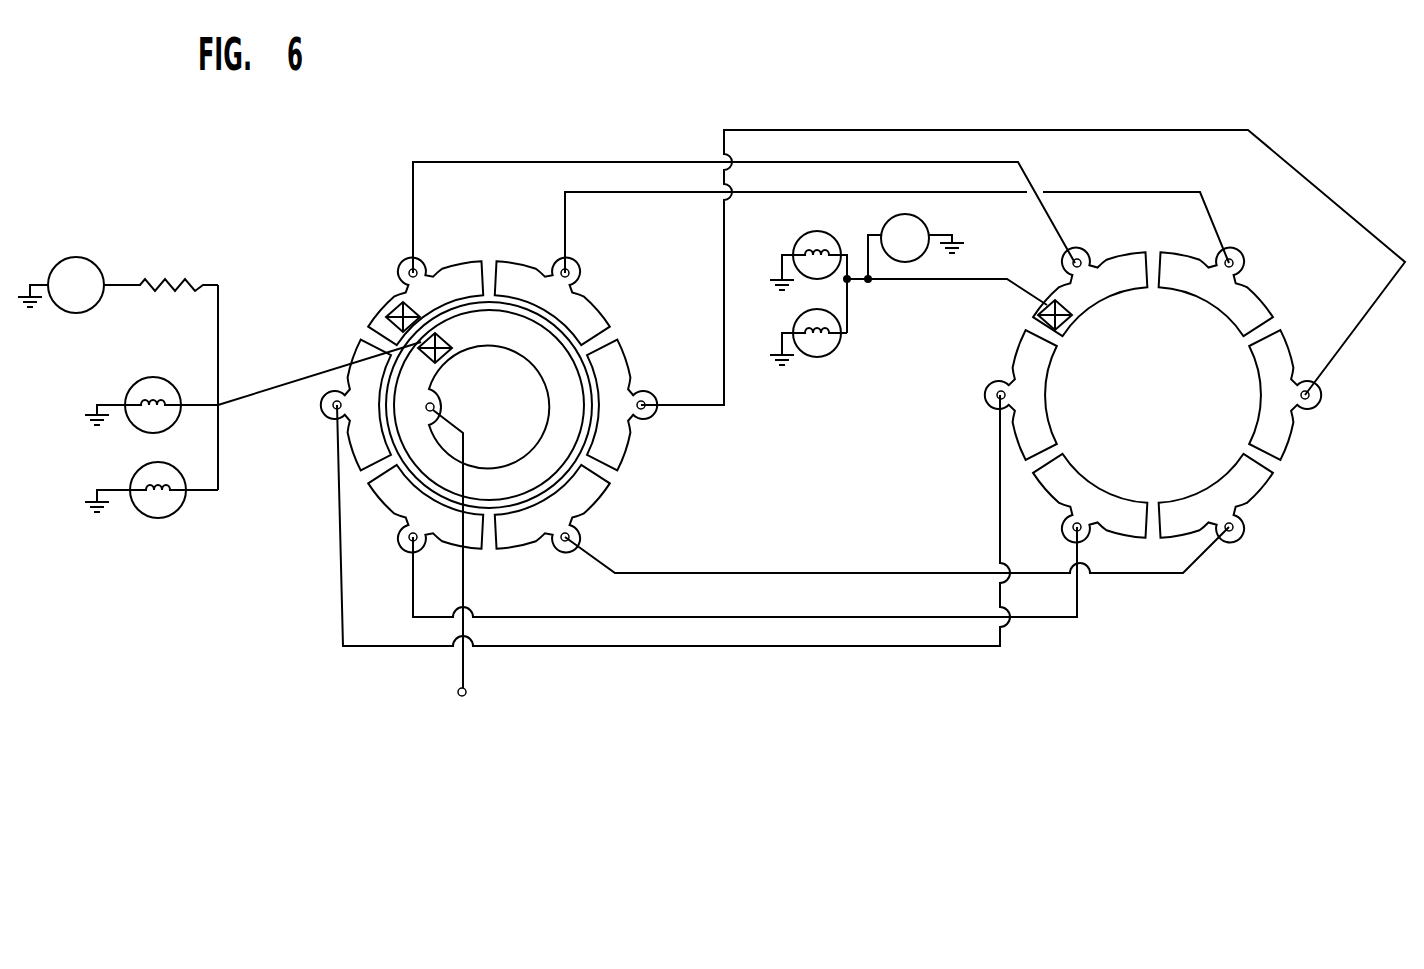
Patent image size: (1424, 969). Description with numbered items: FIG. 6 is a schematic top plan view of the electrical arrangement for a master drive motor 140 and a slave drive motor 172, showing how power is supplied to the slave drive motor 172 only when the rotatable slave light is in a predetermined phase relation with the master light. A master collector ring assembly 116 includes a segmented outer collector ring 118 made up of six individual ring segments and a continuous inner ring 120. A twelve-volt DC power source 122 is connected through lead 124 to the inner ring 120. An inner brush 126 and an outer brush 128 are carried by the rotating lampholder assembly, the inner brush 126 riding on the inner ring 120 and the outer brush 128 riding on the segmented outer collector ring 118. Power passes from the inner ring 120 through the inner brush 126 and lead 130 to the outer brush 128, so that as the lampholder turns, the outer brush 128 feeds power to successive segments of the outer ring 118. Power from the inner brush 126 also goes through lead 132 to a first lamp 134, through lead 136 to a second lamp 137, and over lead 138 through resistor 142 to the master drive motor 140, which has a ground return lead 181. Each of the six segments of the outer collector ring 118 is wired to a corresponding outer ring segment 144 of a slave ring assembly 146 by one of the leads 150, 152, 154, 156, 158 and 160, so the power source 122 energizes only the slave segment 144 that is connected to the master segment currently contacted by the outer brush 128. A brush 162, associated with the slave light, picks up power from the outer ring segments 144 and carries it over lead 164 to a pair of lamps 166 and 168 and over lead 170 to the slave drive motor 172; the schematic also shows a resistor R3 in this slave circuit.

The master collector ring assembly 116 is at (517, 394).
The segmented outer collector ring 118 is at (453, 260).
The continuous inner ring 120 is at (549, 341).
The 12 VDC power source 122 is at (465, 690).
The lead 124 is at (465, 585).
The inner brush 126 is at (445, 345).
The outer brush 128 is at (385, 325).
The lead 130 is at (432, 308).
The lead 132 is at (253, 390).
The first lamp 134 is at (133, 387).
The lead 136 is at (222, 440).
The second lamp 137 is at (183, 507).
The lead 138 is at (222, 318).
The master drive motor 140 is at (96, 260).
The resistor 142 is at (180, 272).
The outer ring segment 144 is at (1297, 430).
The slave ring assembly 146 is at (1161, 395).
The lead 150 is at (798, 128).
The lead 152 is at (652, 160).
The lead 154 is at (680, 193).
The lead 156 is at (812, 572).
The lead 158 is at (758, 617).
The lead 160 is at (700, 648).
The brush 162 is at (1040, 303).
The lead 164 is at (970, 278).
The lamp 166 is at (800, 238).
The lamp 168 is at (816, 358).
The lead 170 is at (866, 237).
The slave drive motor 172 is at (927, 220).
The ground return lead 181 is at (33, 280).
The resistor R3 is at (1268, 297).